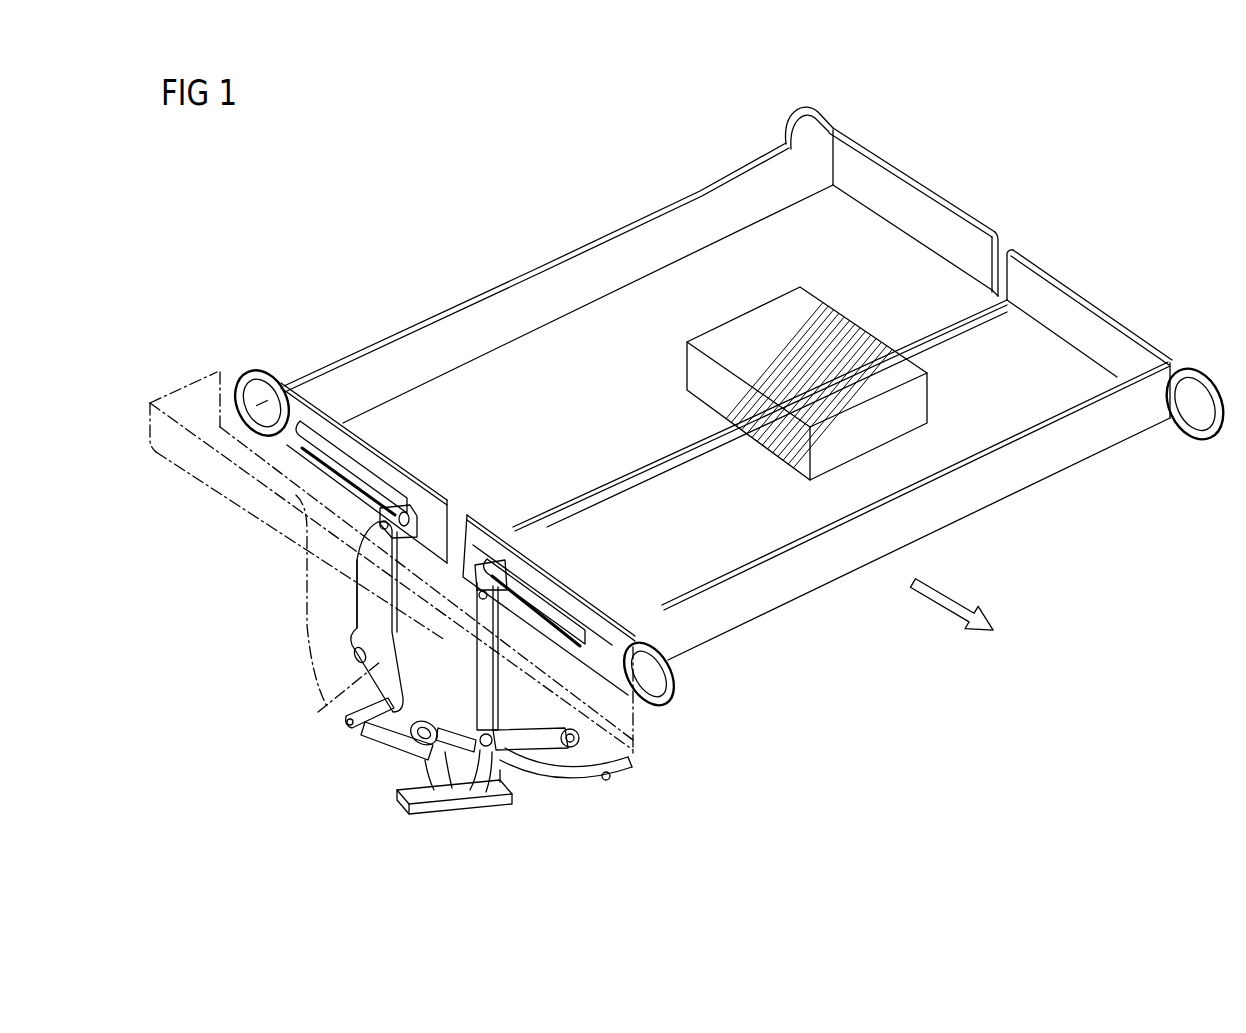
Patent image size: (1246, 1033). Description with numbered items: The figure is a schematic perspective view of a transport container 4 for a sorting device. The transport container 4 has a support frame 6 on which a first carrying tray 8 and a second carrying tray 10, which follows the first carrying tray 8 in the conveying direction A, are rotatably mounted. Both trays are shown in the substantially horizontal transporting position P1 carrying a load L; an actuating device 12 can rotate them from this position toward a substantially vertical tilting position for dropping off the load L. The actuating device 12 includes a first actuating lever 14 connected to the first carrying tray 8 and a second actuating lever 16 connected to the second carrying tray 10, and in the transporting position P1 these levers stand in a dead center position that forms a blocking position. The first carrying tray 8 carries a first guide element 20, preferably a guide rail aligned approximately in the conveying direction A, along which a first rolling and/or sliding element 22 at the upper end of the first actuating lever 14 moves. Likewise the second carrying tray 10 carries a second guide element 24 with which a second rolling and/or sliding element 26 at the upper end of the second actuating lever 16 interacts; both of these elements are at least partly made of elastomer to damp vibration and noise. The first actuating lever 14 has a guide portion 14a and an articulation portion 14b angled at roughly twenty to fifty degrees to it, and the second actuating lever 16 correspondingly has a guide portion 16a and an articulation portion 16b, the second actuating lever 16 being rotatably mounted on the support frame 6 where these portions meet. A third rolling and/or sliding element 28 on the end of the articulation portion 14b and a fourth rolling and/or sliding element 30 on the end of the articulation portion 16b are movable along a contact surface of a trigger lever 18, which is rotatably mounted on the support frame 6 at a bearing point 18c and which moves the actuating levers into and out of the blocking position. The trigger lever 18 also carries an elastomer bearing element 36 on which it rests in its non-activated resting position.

The transport container 4 is at (415, 211).
The support frame 6 is at (318, 645).
The first carrying tray 8 is at (737, 555).
The second carrying tray 10 is at (540, 348).
The actuating device 12 is at (366, 775).
The first actuating lever 14 is at (563, 787).
The guide portion 14a is at (563, 697).
The articulation portion 14b is at (480, 808).
The second actuating lever 16 is at (333, 662).
The guide portion 16a is at (380, 613).
The articulation portion 16b is at (340, 703).
The trigger lever 18 is at (530, 797).
The bearing point 18c is at (608, 778).
The first guide element 20 is at (593, 607).
The first rolling and/or sliding element 22 is at (520, 588).
The second guide element 24 is at (353, 470).
The second rolling and/or sliding element 26 is at (420, 508).
The third rolling and/or sliding element 28 is at (410, 803).
The fourth rolling and/or sliding element 30 is at (352, 733).
The bearing element 36 is at (427, 717).
The load L is at (777, 322).
The conveying direction A is at (963, 598).
The transporting position P1 is at (735, 675).